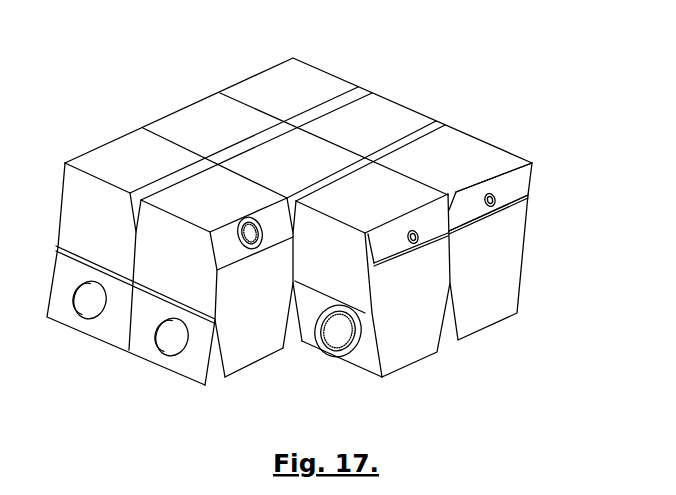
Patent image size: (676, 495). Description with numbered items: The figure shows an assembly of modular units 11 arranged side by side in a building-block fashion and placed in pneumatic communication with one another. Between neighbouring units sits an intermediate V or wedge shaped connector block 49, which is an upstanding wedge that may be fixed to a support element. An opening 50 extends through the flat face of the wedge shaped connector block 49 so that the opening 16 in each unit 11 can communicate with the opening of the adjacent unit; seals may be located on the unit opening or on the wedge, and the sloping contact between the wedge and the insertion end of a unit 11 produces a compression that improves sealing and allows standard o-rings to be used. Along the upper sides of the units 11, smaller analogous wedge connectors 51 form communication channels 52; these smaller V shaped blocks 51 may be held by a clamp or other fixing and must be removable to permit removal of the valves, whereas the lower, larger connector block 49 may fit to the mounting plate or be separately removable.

The modular unit 11 is at (366, 141).
The wedge connector 51 is at (517, 183).
The communication channel 52 is at (487, 195).
The connector block 49 is at (137, 343).
The opening 50 is at (173, 345).
The opening in the unit 16 is at (335, 330).